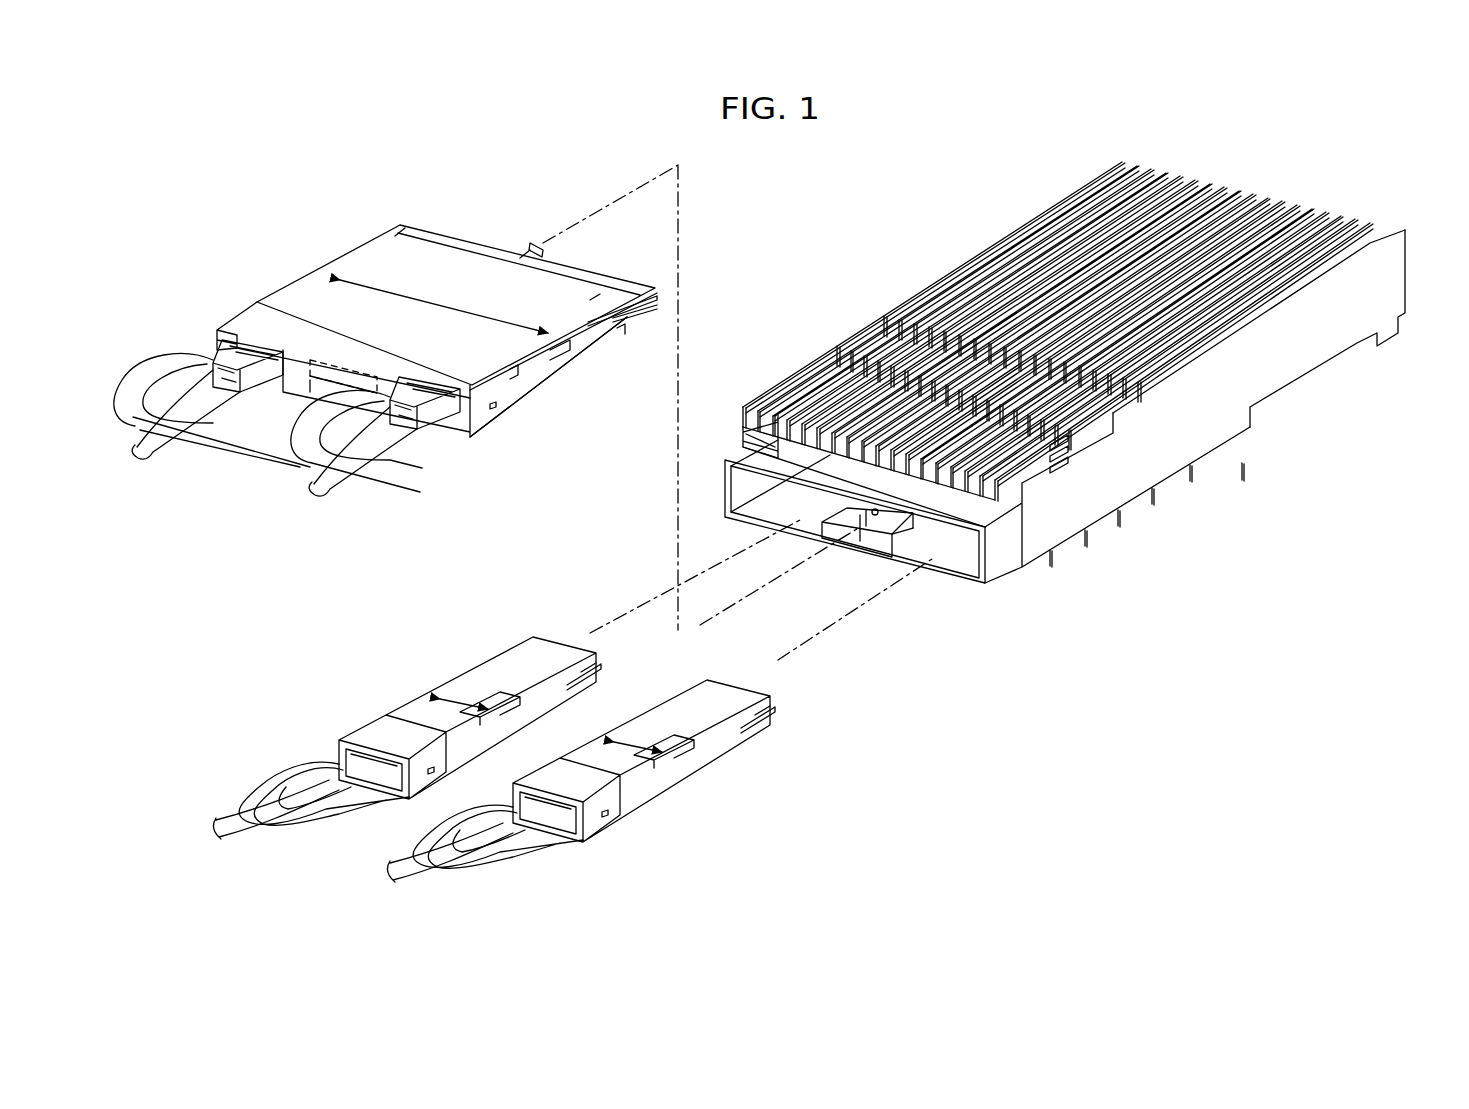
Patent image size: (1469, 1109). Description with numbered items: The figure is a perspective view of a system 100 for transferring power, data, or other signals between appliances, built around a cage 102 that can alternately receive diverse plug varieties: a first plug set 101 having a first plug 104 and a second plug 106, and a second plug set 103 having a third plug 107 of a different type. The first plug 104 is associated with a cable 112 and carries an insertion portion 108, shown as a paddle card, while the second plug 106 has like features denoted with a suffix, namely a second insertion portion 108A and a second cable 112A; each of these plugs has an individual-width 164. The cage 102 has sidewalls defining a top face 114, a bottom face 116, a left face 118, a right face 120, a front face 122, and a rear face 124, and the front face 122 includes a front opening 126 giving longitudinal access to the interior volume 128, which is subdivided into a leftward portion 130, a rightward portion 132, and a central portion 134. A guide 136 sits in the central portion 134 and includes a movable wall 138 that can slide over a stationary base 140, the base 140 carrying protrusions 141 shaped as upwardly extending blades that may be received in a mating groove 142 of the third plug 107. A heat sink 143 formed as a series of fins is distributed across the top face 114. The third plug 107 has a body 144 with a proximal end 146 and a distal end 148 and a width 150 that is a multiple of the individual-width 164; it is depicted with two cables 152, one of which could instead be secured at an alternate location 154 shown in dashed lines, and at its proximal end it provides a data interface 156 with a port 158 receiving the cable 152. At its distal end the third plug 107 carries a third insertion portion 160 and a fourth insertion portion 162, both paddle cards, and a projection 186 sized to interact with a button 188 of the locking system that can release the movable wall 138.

The system 100 is at (1150, 650).
The first plug set 101 is at (524, 767).
The cage 102 is at (1046, 330).
The second plug set 103 is at (408, 341).
The first plug 104 is at (426, 746).
The second plug 106 is at (611, 797).
The third plug 107 is at (437, 282).
The insertion portion 108 is at (603, 682).
The second insertion portion 108A is at (764, 719).
The cable 112 is at (406, 878).
The second cable 112A is at (406, 878).
The top face 114 is at (1088, 541).
The bottom face 116 is at (977, 581).
The left face 118 is at (807, 511).
The right face 120 is at (940, 537).
The front face 122 is at (745, 449).
The rear face 124 is at (1405, 268).
The front opening 126 is at (752, 515).
The interior volume 128 is at (920, 556).
The leftward portion 130 is at (805, 525).
The rightward portion 132 is at (965, 573).
The central portion 134 is at (840, 566).
The guide 136 is at (745, 423).
The movable wall 138 is at (1025, 478).
The base 140 is at (847, 514).
The protrusions 141 is at (897, 527).
The mating groove 142 is at (342, 392).
The heat sink 143 is at (1272, 188).
The body 144 is at (558, 393).
The proximal end 146 is at (427, 402).
The distal end 148 is at (618, 362).
The width 150 is at (437, 282).
The cables 152 is at (154, 455).
The alternate location 154 is at (360, 366).
The data interface 156 is at (277, 396).
The port 158 is at (232, 330).
The third insertion portion 160 is at (646, 312).
The fourth insertion portion 162 is at (432, 226).
The individual-width 164 is at (512, 701).
The projection 186 is at (536, 246).
The button 188 is at (879, 511).